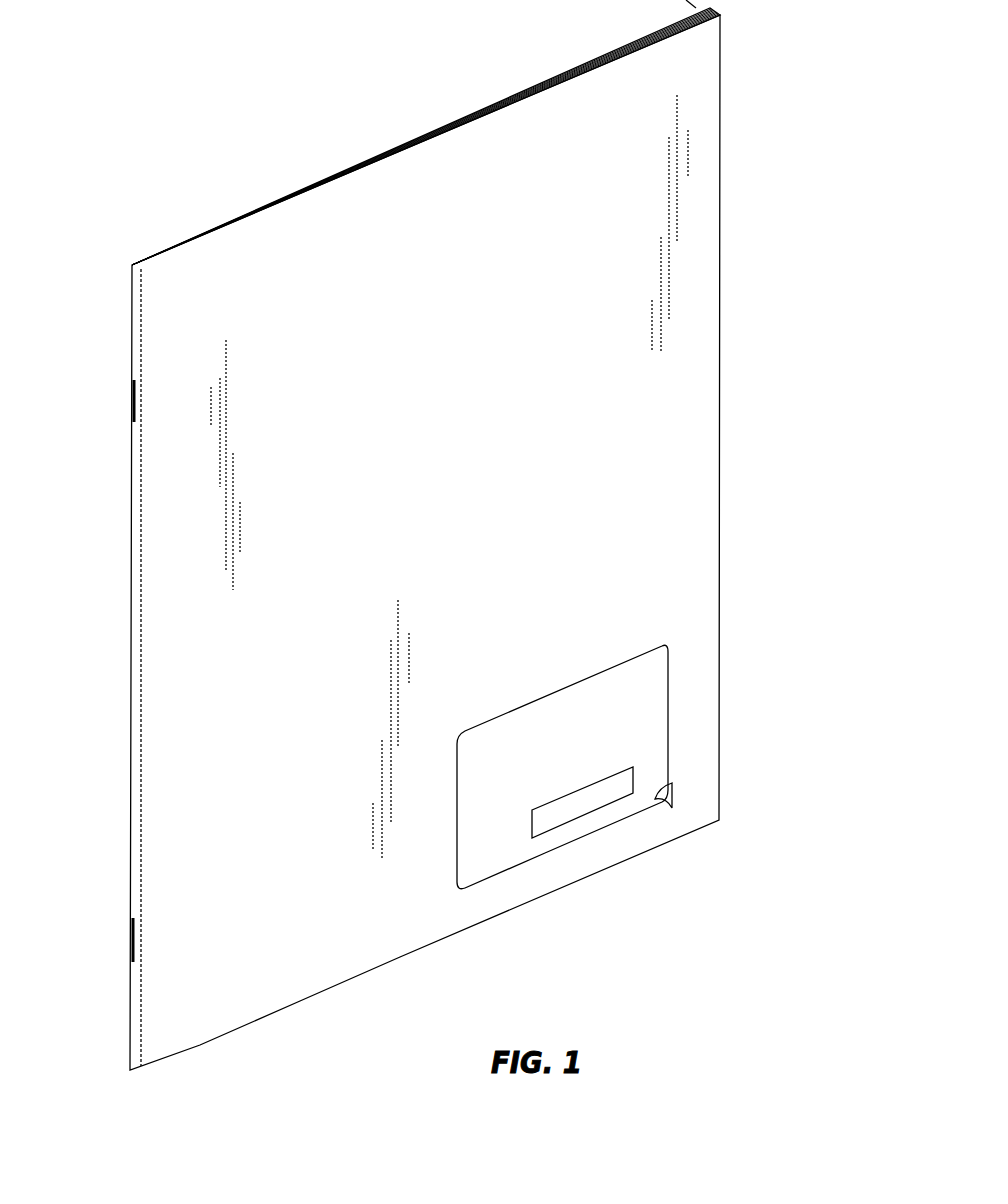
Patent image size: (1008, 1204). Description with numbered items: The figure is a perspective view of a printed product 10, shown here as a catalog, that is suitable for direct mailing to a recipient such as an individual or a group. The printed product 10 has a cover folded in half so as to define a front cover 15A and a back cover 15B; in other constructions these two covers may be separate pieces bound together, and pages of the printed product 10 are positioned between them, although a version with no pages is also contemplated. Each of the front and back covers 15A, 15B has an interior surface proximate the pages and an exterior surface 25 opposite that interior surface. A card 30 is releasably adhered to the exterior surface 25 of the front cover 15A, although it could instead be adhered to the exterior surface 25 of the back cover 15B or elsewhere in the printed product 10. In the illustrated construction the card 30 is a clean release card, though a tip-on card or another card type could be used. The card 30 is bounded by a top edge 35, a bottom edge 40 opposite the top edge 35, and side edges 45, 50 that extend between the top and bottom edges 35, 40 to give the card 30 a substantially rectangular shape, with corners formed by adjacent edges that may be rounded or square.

The printed product 10 is at (796, 118).
The front cover 15A is at (469, 499).
The back cover 15B is at (363, 157).
The exterior surface 25 is at (226, 694).
The card 30 is at (540, 876).
The top edge 35 is at (585, 788).
The bottom edge 40 is at (582, 843).
The side edge 45 is at (457, 842).
The side edge 50 is at (670, 715).